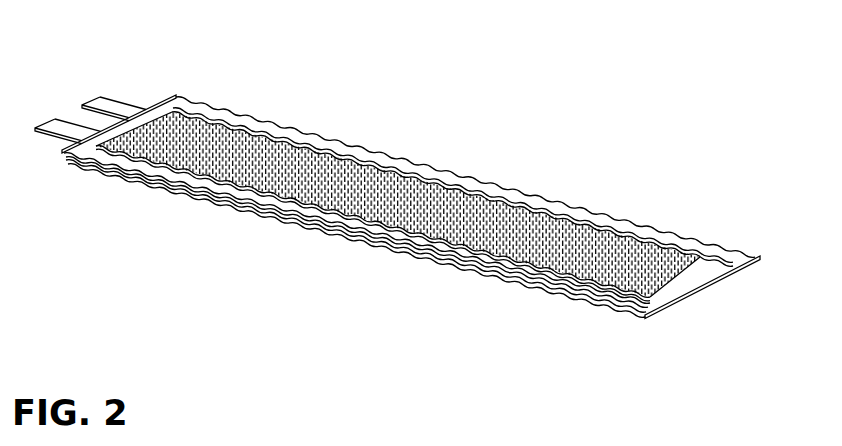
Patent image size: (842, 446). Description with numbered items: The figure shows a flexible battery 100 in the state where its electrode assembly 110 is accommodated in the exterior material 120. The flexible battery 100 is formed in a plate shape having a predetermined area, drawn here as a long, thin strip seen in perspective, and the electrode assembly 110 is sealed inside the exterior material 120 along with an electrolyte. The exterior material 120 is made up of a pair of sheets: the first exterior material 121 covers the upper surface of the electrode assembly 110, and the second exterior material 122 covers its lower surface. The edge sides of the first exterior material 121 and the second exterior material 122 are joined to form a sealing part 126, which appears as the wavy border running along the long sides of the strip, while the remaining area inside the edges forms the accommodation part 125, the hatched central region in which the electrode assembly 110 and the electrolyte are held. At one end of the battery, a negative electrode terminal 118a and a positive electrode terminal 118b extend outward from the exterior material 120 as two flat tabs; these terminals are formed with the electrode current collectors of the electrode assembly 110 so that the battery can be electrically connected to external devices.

The flexible battery 100 is at (438, 52).
The electrode assembly 110 is at (695, 278).
The negative electrode terminal 118a is at (115, 104).
The positive electrode terminal 118b is at (58, 123).
The exterior material 120 is at (697, 391).
The first exterior material 121 is at (667, 297).
The second exterior material 122 is at (617, 313).
The accommodation part 125 is at (457, 196).
The sealing part 126 is at (546, 203).